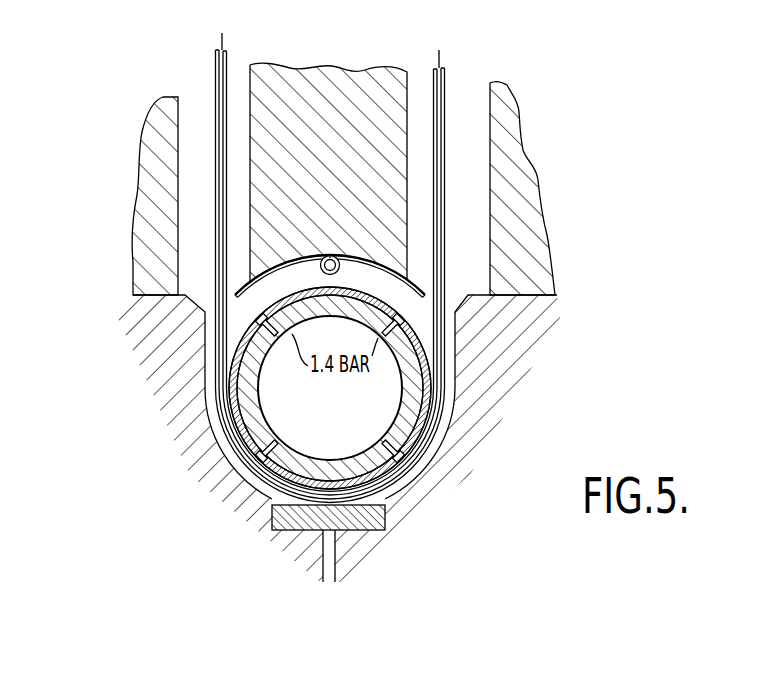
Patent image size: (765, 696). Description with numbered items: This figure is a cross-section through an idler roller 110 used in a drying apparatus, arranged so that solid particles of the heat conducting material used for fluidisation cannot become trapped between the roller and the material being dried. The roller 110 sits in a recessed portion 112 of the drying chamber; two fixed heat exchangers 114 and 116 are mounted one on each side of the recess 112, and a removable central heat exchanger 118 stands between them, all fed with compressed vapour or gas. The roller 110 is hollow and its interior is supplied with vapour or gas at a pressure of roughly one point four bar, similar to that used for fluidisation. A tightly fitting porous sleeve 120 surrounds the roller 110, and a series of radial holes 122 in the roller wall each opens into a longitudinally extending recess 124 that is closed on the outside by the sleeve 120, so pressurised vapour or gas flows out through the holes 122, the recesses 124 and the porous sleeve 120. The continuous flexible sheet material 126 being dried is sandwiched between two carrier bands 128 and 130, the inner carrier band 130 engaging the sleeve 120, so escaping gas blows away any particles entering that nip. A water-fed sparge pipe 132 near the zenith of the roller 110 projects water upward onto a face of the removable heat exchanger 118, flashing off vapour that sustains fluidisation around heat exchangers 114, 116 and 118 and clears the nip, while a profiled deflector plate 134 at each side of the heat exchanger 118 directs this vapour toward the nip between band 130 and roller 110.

The roller 110 is at (447, 427).
The recessed portion 112 is at (464, 424).
The fixed heat exchanger 114 is at (140, 260).
The fixed heat exchanger 116 is at (510, 252).
The removable central heat exchanger 118 is at (345, 80).
The sleeve 120 is at (436, 366).
The radial holes 122 is at (258, 355).
The longitudinally extending recess 124 is at (250, 337).
The flexible sheet material 126 is at (221, 42).
The carrier band 128 is at (216, 108).
The inner carrier band 130 is at (228, 58).
The sparge pipe 132 is at (336, 262).
The deflector plate 134 is at (240, 292).